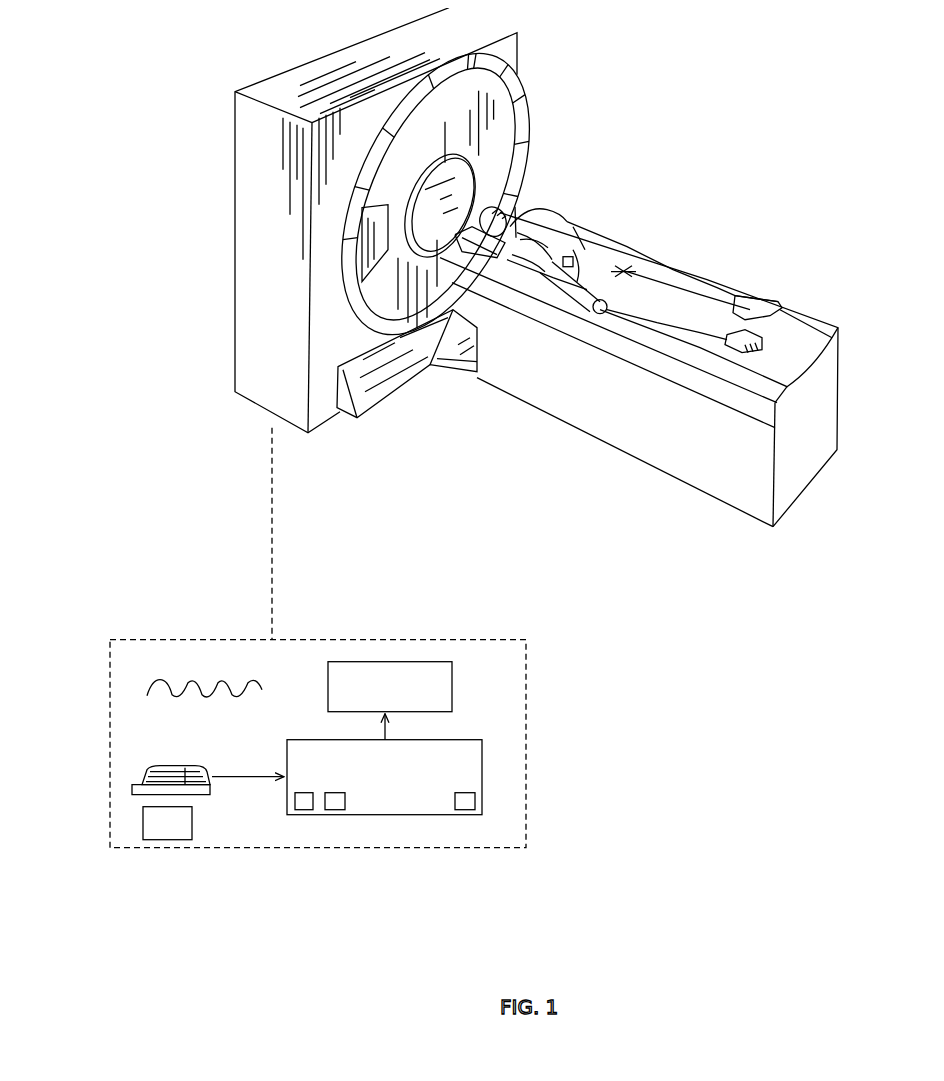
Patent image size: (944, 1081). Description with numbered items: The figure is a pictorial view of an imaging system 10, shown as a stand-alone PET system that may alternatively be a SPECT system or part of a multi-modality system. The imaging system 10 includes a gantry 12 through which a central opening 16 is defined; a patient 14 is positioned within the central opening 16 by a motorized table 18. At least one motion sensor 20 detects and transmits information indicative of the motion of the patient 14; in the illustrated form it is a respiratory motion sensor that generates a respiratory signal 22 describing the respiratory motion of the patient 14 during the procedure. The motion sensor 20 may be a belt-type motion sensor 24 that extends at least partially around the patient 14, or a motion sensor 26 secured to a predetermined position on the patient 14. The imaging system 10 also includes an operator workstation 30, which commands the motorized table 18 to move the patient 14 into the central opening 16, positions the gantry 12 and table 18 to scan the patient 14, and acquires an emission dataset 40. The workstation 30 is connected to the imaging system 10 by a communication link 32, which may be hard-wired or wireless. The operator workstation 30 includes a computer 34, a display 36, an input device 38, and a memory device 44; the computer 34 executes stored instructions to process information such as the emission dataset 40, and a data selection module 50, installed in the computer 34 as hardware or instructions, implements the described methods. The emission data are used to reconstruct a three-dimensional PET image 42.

The imaging system 10 is at (724, 93).
The gantry 12 is at (515, 43).
The patient 14 is at (716, 292).
The central opening 16 is at (446, 186).
The motorized table 18 is at (575, 418).
The motion sensor 20 is at (618, 173).
The respiratory signal 22 is at (136, 688).
The belt-type motion sensor 24 is at (573, 227).
The motion sensor 26 is at (631, 242).
The operator workstation 30 is at (176, 640).
The communication link 32 is at (270, 452).
The computer 34 is at (283, 797).
The display 36 is at (452, 683).
The input device 38 is at (186, 768).
The emission dataset 40 is at (301, 810).
The 3D PET image 42 is at (335, 810).
The memory device 44 is at (150, 821).
The data selection module 50 is at (470, 810).